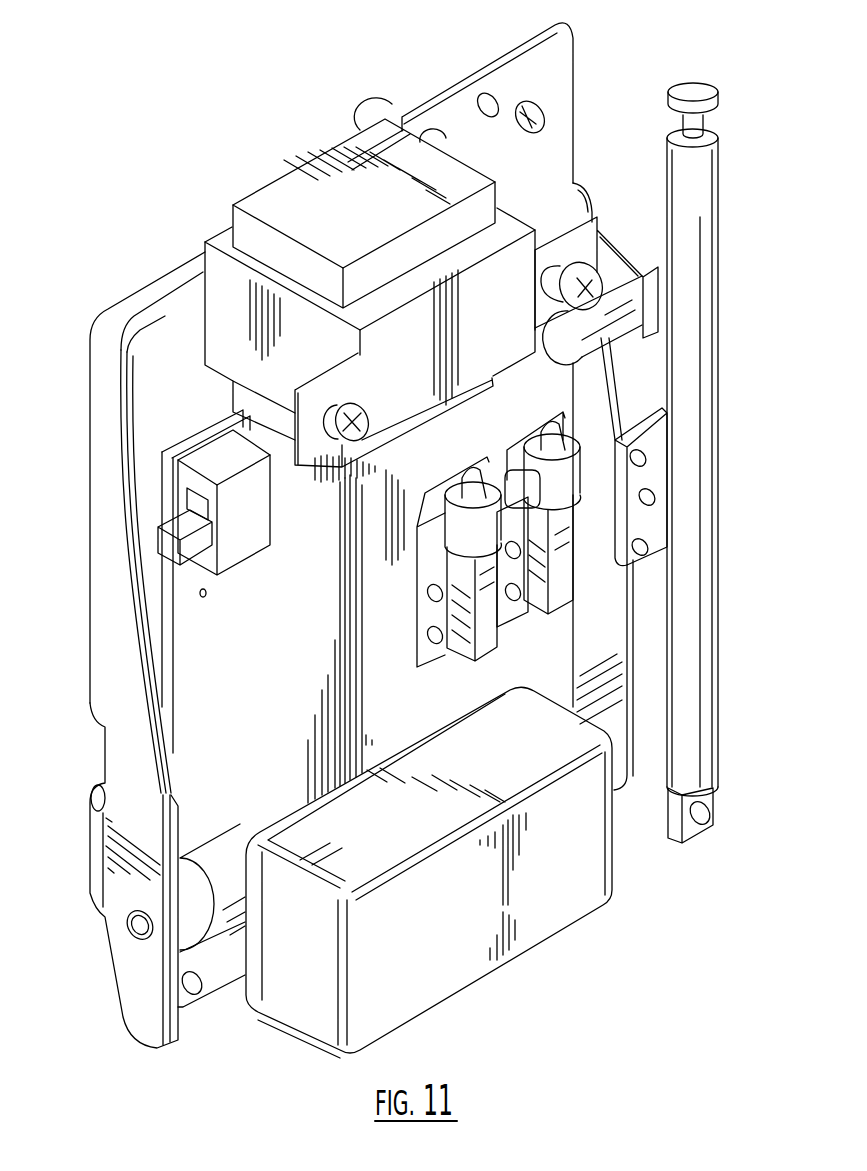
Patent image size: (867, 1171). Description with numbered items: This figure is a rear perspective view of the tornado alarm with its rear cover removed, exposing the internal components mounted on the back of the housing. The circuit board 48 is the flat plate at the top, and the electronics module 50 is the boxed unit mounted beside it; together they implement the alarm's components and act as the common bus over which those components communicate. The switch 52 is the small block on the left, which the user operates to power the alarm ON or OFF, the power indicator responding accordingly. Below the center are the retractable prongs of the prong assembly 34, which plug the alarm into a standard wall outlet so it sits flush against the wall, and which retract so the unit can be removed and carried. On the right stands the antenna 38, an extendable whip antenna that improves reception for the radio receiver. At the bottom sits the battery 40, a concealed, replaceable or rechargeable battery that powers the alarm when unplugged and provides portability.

The retractable electrical prong assembly 34 is at (557, 583).
The antenna 38 is at (697, 217).
The battery backup system 40 is at (440, 970).
The circuit board 48 is at (565, 63).
The electronics module 50 is at (217, 283).
The switch 52 is at (225, 507).